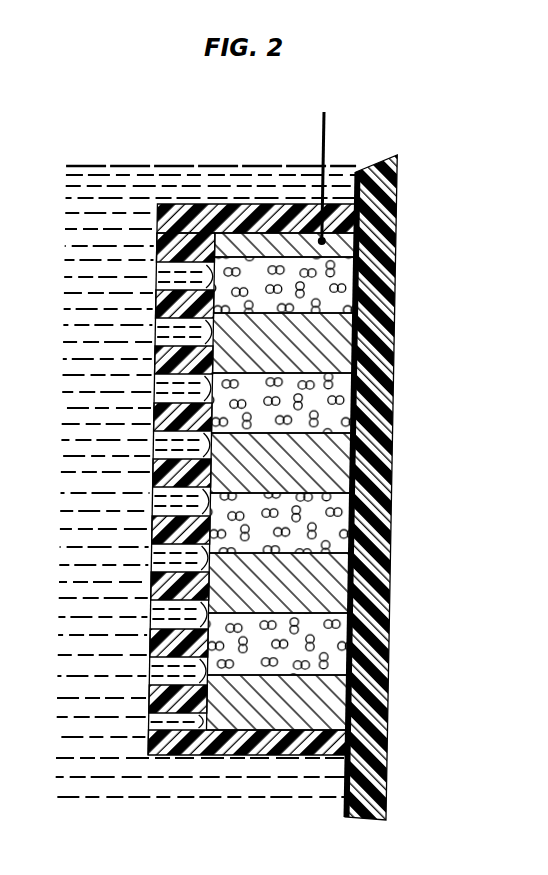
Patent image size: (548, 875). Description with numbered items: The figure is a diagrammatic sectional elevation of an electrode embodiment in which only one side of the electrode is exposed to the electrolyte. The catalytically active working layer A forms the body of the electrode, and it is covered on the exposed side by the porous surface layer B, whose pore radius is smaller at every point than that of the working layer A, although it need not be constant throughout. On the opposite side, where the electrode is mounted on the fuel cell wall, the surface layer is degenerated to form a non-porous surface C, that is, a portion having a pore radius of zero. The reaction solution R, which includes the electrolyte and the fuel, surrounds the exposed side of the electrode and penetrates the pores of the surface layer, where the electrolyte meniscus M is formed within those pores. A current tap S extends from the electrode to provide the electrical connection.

The working layer A is at (355, 328).
The porous surface layer B is at (243, 217).
The non-porous surface C is at (388, 454).
The electrolyte meniscus M is at (218, 500).
The reaction solution R is at (84, 501).
The current tap S is at (326, 132).